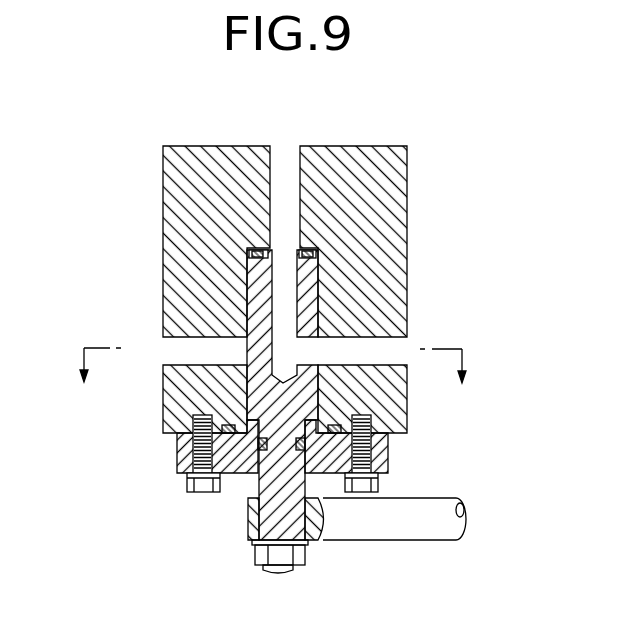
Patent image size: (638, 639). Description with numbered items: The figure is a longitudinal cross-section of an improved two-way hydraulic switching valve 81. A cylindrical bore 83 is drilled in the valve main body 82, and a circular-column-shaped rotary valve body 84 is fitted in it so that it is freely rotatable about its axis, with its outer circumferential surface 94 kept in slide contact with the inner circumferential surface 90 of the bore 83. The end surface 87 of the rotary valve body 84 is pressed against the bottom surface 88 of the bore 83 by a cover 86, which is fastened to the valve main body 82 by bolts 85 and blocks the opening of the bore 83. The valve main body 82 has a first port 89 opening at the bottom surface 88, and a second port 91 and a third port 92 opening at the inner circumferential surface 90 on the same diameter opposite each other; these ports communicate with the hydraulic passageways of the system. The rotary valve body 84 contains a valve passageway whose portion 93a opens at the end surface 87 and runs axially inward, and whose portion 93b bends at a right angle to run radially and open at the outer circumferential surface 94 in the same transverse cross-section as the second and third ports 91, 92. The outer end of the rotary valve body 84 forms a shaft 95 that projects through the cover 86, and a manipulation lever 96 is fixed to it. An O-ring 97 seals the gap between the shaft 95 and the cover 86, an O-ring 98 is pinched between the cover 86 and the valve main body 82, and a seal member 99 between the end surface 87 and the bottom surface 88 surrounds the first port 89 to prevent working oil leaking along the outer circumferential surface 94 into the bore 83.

The hydraulic switching valve 81 is at (440, 143).
The valve main body 82 is at (395, 219).
The cylindrical bore 83 is at (320, 278).
The rotary valve body 84 is at (320, 326).
The bolts 85 is at (190, 483).
The cover 86 is at (241, 470).
The end surface 87 is at (316, 249).
The bottom surface 88 is at (243, 251).
The first port 89 is at (288, 196).
The inner circumferential surface 90 is at (315, 298).
The second port 91 is at (370, 352).
The third port 92 is at (186, 355).
The valve passageway portion 93a is at (278, 312).
The valve passageway portion 93b is at (340, 426).
The outer circumferential surface 94 is at (320, 277).
The shaft 95 is at (252, 533).
The manipulation lever 96 is at (405, 533).
The O-ring 97 is at (303, 440).
The O-ring 98 is at (398, 438).
The seal member 99 is at (258, 250).